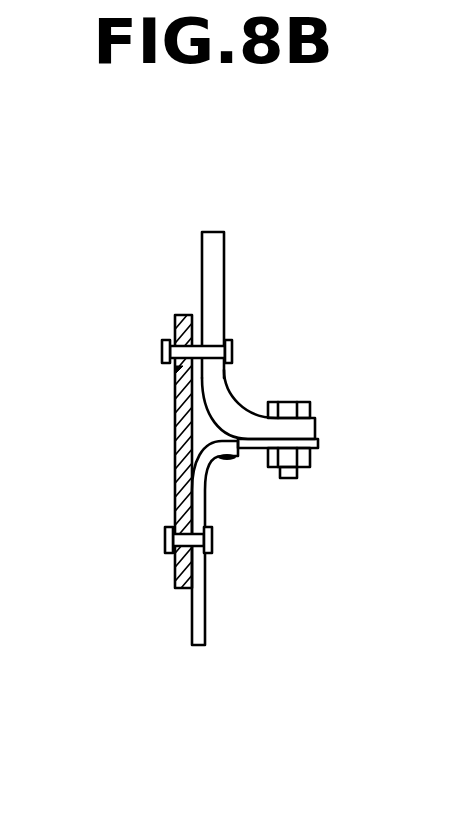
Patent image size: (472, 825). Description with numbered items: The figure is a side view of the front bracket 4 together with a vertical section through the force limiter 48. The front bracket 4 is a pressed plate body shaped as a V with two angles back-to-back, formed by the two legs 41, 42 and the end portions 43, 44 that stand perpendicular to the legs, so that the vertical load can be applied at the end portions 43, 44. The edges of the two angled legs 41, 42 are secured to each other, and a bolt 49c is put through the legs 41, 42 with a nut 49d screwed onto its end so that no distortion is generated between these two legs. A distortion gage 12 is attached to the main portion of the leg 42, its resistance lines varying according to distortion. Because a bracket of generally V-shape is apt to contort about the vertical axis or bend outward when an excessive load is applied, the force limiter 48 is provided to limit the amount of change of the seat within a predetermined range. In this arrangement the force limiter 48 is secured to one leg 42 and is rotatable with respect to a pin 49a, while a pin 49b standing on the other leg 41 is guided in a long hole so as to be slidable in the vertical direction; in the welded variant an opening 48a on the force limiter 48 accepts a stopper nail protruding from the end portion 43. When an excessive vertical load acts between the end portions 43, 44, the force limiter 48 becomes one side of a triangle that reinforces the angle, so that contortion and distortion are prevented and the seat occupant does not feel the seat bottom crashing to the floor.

The front bracket 4 is at (218, 448).
The distortion gage 12 is at (230, 463).
The leg 41 is at (313, 428).
The leg 42 is at (318, 448).
The end portion 43 is at (208, 262).
The end portion 44 is at (198, 630).
The force limiter 48 is at (175, 462).
The opening 48a is at (172, 368).
The pin 49a is at (165, 540).
The pin 49b is at (162, 342).
The bolt 49c is at (290, 405).
The nut 49d is at (273, 468).